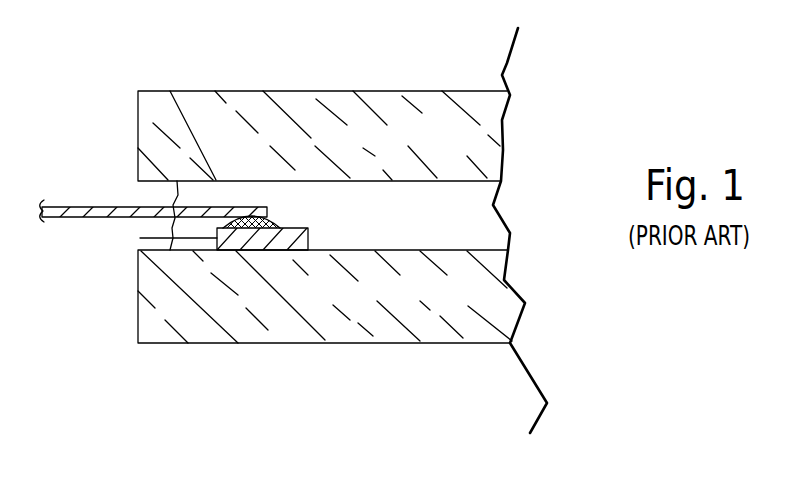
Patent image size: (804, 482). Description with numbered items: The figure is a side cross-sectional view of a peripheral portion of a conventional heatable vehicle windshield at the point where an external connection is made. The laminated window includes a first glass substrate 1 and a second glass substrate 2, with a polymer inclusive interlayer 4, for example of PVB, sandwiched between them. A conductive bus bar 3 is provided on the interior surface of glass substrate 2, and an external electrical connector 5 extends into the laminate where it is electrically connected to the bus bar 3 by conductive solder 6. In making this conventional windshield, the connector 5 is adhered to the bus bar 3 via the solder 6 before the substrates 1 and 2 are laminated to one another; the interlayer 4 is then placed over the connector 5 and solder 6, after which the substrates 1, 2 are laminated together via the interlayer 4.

The glass substrate 1 is at (483, 110).
The glass substrate 2 is at (431, 323).
The conductive bus bar 3 is at (140, 238).
The polymer inclusive interlayer 4 is at (458, 224).
The external electrical connector 5 is at (88, 207).
The conductive solder 6 is at (268, 219).